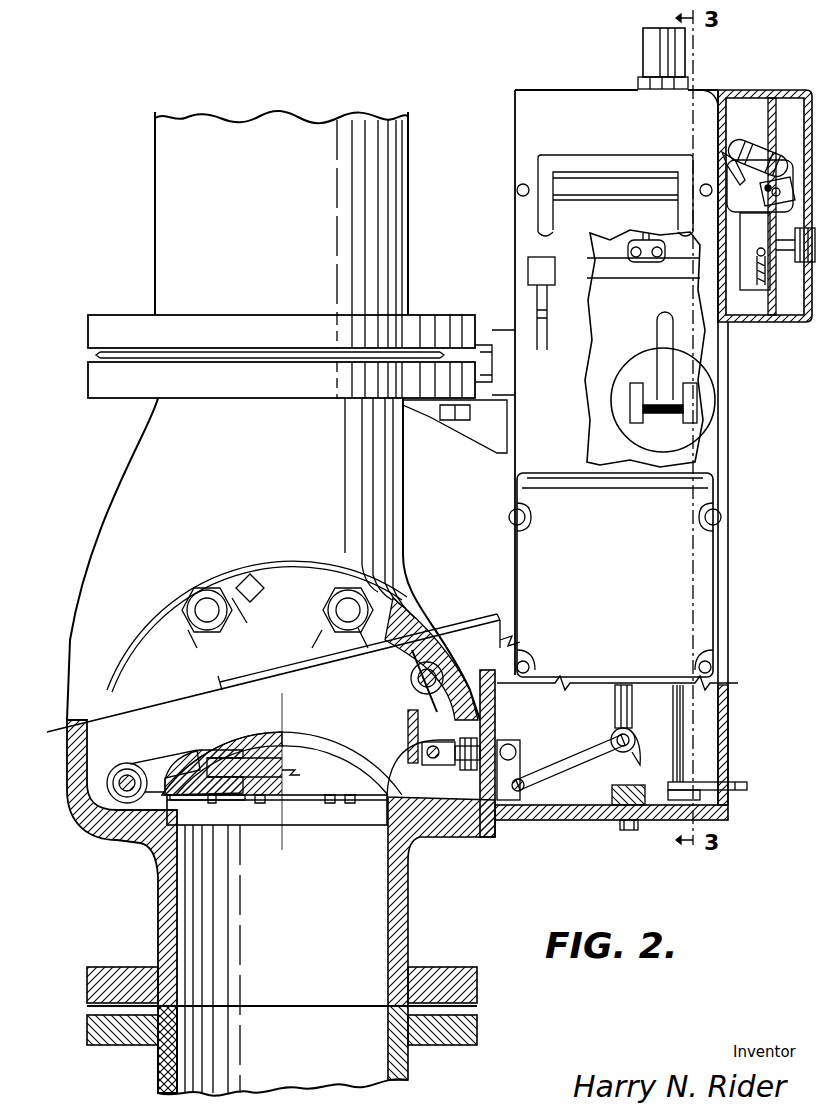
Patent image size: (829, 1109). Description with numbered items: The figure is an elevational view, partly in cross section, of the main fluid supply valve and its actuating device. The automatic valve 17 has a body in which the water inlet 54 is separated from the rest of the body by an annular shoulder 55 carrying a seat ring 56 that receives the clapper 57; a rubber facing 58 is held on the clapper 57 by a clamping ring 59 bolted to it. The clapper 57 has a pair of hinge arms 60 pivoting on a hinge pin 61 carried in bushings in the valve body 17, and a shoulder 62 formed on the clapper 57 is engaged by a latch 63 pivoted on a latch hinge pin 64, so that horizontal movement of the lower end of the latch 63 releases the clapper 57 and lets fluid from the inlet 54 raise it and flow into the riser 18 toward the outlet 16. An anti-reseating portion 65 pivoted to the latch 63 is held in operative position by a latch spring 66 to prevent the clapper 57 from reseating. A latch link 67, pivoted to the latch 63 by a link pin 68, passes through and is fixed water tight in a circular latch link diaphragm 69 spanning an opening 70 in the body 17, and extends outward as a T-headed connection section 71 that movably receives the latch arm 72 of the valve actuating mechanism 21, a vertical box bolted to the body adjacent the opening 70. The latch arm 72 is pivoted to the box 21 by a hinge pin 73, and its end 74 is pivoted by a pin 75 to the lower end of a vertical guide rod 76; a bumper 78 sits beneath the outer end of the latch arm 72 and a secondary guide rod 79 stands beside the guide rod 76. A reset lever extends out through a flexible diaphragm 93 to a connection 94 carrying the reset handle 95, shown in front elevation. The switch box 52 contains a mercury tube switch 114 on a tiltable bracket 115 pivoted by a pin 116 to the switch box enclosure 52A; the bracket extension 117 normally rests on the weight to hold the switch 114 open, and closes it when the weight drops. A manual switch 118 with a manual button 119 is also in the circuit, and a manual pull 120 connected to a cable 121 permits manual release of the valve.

The outlet pipe 16 is at (268, 1060).
The automatic valve 17 is at (230, 507).
The riser 18 is at (243, 247).
The valve actuating mechanism 21 is at (600, 547).
The switch box 52 is at (772, 322).
The switch box enclosure 52A is at (780, 92).
The water inlet 54 is at (258, 920).
The annular shoulder 55 is at (155, 840).
The seat ring 56 is at (308, 822).
The clapper 57 is at (283, 735).
The rubber facing 58 is at (185, 758).
The clamping ring 59 is at (238, 800).
The hinge arms 60 is at (133, 764).
The hinge pin 61 is at (113, 778).
The shoulder 62 is at (408, 782).
The latch 63 is at (408, 728).
The latch hinge pin 64 is at (427, 668).
The anti-reseating portion 65 is at (392, 664).
The latch spring 66 is at (412, 650).
The latch link 67 is at (437, 763).
The link pin 68 is at (434, 745).
The latch link diaphragm 69 is at (470, 735).
The opening 70 is at (468, 812).
The T-headed connection section 71 is at (520, 748).
The latch arm 72 is at (570, 762).
The hinge pin 73 is at (524, 783).
The end 74 is at (636, 750).
The pin 75 is at (632, 736).
The guide rod 76 is at (618, 708).
The bumper 78 is at (614, 797).
The secondary guide rod 79 is at (683, 737).
The flexible diaphragm 93 is at (673, 424).
The connection 94 is at (640, 412).
The reset handle 95 is at (655, 345).
The mercury tube switch 114 is at (765, 147).
The tiltable bracket 115 is at (764, 189).
The pin 116 is at (766, 197).
The extension 117 is at (722, 152).
The manual switch 118 is at (761, 250).
The manual button 119 is at (800, 262).
The manual pull 120 is at (608, 273).
The cable 121 is at (646, 238).